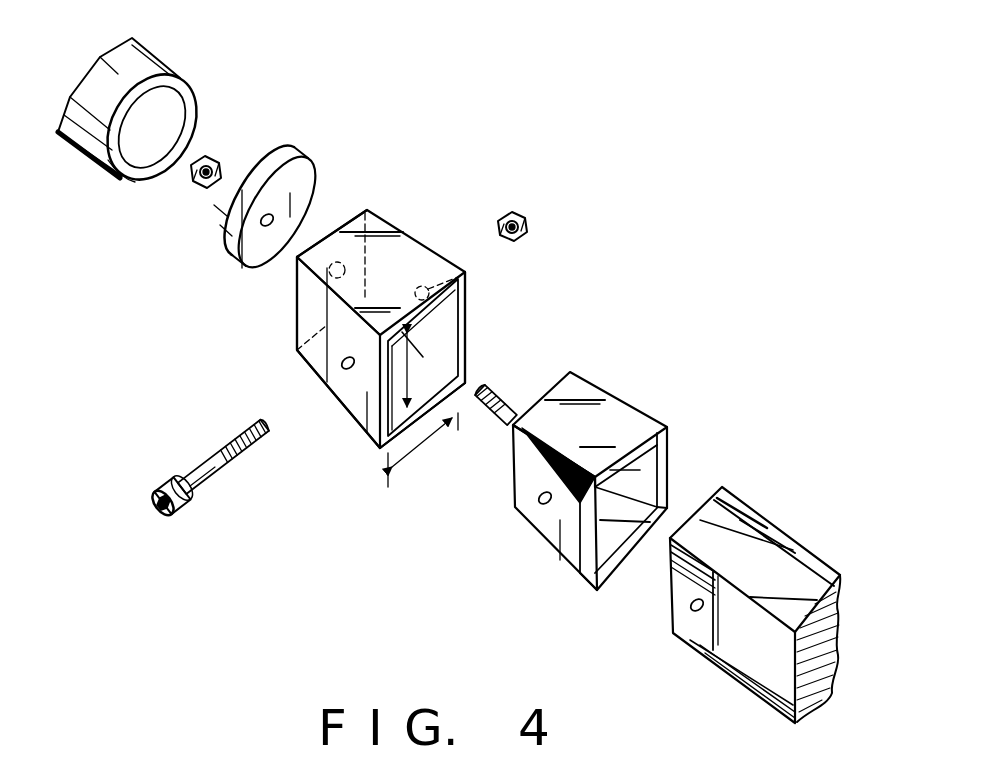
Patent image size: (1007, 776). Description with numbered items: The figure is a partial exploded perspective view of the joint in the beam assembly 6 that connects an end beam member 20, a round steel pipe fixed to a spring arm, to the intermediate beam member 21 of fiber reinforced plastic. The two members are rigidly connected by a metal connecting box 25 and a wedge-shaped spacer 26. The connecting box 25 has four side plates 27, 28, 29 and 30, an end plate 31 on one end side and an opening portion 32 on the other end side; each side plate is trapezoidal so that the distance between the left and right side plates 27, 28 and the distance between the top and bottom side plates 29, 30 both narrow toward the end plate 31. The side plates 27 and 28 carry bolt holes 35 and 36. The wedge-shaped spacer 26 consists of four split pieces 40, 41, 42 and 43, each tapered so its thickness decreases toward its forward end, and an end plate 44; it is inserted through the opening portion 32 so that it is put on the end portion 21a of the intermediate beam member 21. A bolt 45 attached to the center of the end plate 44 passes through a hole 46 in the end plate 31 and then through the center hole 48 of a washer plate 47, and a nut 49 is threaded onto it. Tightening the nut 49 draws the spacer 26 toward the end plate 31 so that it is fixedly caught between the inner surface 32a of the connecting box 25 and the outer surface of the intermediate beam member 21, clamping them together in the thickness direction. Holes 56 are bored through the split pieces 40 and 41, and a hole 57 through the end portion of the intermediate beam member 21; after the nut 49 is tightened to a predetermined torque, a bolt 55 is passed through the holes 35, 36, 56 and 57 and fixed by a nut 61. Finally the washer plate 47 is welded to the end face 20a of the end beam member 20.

The beam assembly 6 is at (759, 588).
The end beam member 20 is at (170, 70).
The end face 20a is at (129, 180).
The intermediate beam member 21 is at (740, 680).
The end portion 21a is at (738, 507).
The connecting box 25 is at (318, 380).
The wedge-shaped spacer 26 is at (582, 483).
The side plate 27 is at (312, 360).
The side plate 28 is at (388, 340).
The side plate 29 is at (348, 300).
The side plate 30 is at (378, 450).
The end plate 31 is at (343, 223).
The opening portion 32 is at (442, 325).
The inner surface 32a is at (446, 344).
The bolt hole 35 is at (348, 372).
The bolt hole 36 is at (468, 273).
The split piece 40 is at (567, 537).
The split piece 41 is at (660, 470).
The split piece 42 is at (630, 422).
The split piece 43 is at (623, 560).
The end plate 44 is at (572, 373).
The bolt 45 is at (510, 392).
The hole 46 is at (343, 266).
The washer plate 47 is at (287, 163).
The center hole 48 is at (273, 221).
The nut 49 is at (222, 160).
The bolt 55 is at (225, 468).
The hole 56 is at (547, 503).
The hole 57 is at (697, 611).
The nut 61 is at (529, 232).